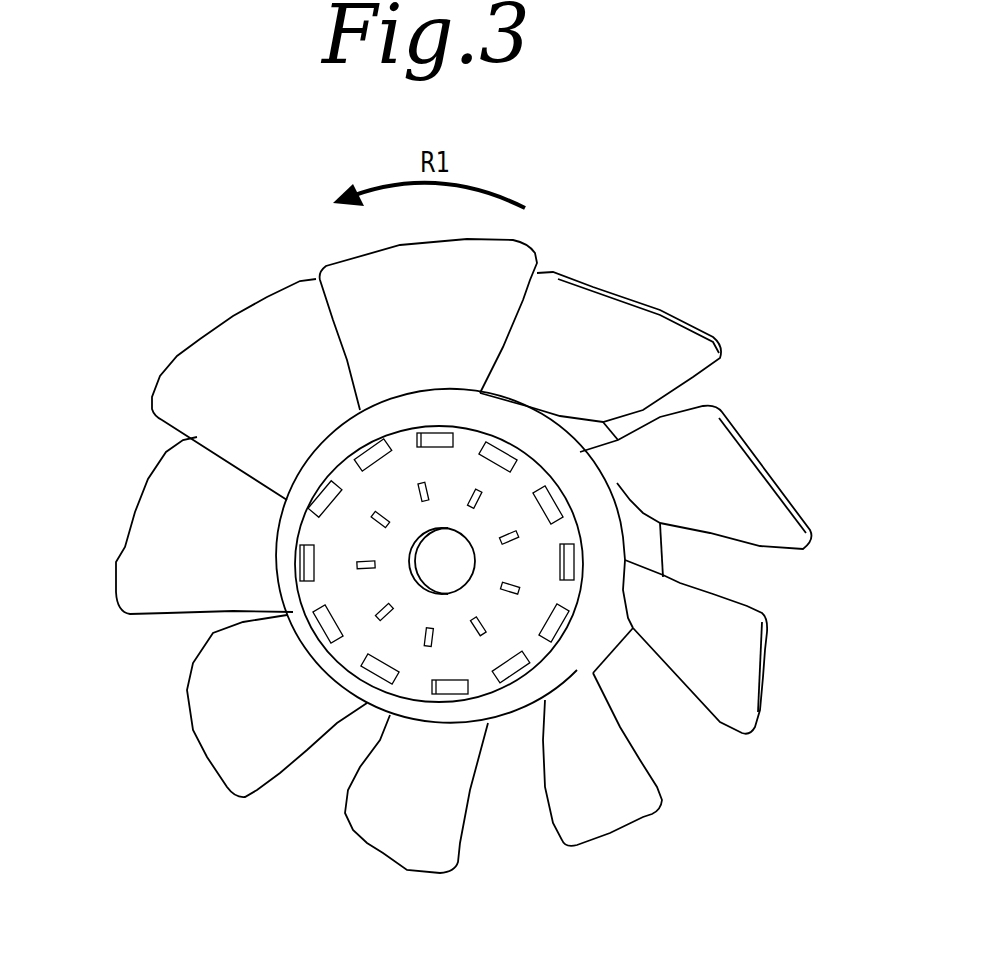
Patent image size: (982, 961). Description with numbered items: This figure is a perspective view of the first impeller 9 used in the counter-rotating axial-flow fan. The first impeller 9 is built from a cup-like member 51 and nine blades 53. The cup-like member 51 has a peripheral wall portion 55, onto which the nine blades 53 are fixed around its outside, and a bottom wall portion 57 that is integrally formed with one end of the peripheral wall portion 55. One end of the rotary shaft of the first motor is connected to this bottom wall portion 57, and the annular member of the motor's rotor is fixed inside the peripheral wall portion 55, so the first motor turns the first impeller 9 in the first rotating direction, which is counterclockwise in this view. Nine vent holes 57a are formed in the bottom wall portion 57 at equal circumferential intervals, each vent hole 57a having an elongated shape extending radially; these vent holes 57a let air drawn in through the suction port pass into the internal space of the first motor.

The first impeller 9 is at (145, 383).
The cup-like member 51 is at (413, 653).
The blade 53 is at (596, 303).
The peripheral wall portion 55 is at (613, 647).
The bottom wall portion 57 is at (507, 676).
The vent hole 57a is at (483, 493).